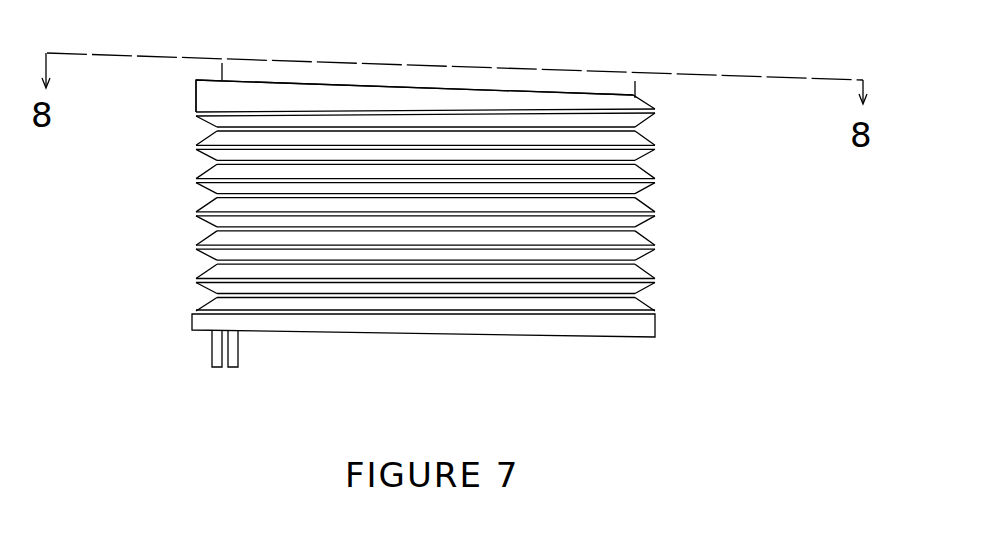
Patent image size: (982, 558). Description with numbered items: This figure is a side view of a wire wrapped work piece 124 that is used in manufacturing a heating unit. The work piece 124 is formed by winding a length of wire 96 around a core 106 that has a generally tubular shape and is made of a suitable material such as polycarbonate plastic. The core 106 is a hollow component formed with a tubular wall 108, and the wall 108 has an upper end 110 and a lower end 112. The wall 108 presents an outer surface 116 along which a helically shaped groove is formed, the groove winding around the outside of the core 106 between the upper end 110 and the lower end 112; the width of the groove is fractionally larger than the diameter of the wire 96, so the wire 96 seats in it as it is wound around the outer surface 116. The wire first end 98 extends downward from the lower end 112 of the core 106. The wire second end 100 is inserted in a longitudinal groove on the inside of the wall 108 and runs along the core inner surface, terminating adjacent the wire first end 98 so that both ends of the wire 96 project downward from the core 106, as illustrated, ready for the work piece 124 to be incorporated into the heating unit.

The wire 96 is at (510, 203).
The wire first end 98 is at (240, 352).
The wire second end 100 is at (212, 357).
The core 106 is at (451, 83).
The tubular wall 108 is at (195, 100).
The upper end 110 is at (267, 62).
The lower end 112 is at (432, 335).
The outer surface 116 is at (640, 135).
The work piece 124 is at (471, 240).